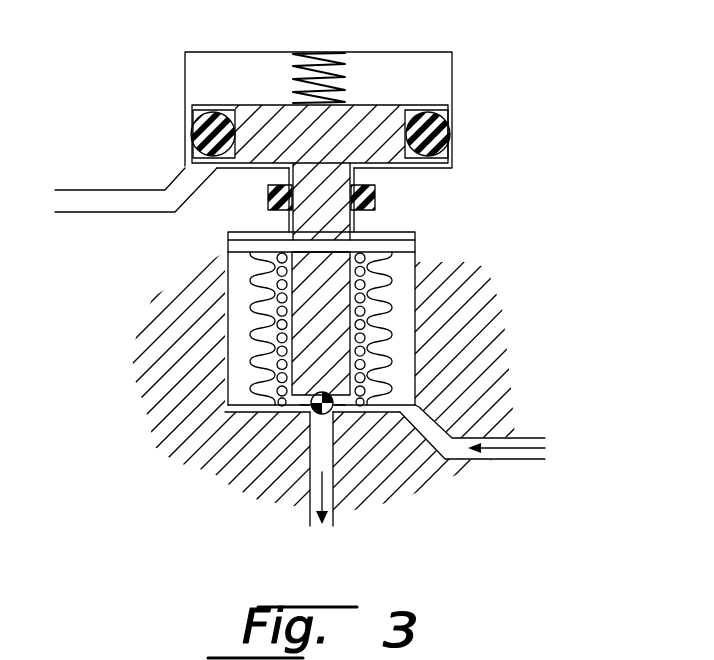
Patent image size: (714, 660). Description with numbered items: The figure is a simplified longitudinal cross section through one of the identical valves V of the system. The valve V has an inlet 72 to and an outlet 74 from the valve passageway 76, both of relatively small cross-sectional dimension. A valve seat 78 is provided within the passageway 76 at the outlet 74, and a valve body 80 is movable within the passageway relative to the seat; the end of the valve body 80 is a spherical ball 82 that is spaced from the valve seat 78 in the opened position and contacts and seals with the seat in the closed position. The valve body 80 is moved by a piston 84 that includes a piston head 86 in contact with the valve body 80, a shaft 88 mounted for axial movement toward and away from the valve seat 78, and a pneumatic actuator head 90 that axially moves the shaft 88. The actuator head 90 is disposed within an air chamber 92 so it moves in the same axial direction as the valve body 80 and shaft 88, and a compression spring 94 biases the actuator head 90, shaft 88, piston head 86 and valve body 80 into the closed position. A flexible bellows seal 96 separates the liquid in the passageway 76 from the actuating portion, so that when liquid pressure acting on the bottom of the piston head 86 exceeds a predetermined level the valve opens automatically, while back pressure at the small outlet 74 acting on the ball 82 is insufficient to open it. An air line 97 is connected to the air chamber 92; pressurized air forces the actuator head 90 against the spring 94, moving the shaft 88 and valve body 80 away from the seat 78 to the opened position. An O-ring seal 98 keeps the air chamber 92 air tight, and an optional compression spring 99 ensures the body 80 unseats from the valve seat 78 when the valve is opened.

The inlet 72 is at (512, 438).
The outlet 74 is at (332, 498).
The valve passageway 76 is at (235, 410).
The valve seat 78 is at (310, 405).
The valve body 80 is at (338, 332).
The spherical ball 82 is at (333, 410).
The piston 84 is at (282, 178).
The piston head 86 is at (379, 243).
The shaft 88 is at (338, 217).
The pneumatic actuator head 90 is at (339, 143).
The air chamber 92 is at (373, 68).
The compression spring 94 is at (293, 67).
The flexible bellows seal 96 is at (258, 323).
The air line 97 is at (95, 203).
The O-ring seal 98 is at (268, 207).
The compression spring 99 is at (268, 298).
The valve V is at (462, 242).